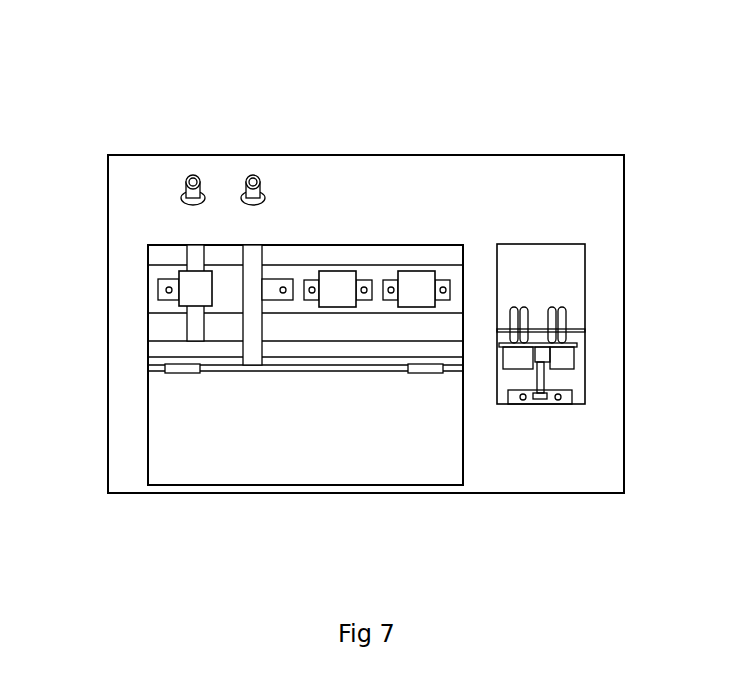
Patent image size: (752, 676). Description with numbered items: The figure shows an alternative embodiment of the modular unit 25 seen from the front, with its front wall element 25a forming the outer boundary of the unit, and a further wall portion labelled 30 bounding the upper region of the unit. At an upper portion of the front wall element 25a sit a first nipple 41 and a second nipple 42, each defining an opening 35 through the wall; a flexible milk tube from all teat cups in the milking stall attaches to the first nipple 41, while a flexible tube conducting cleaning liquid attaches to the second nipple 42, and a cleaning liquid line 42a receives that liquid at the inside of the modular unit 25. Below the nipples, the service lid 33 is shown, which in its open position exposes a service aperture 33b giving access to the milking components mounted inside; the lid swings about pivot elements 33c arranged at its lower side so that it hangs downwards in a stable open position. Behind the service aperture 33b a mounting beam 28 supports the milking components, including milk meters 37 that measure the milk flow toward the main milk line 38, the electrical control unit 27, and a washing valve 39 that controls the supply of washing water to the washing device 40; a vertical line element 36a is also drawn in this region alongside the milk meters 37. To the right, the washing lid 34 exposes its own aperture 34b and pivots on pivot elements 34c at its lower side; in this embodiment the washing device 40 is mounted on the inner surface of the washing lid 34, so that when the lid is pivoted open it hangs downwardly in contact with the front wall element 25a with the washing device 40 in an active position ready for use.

The modular unit 25 is at (518, 108).
The front wall element 25a is at (130, 412).
The housing wall 30 is at (370, 168).
The service lid 33 is at (203, 448).
The service aperture 33b is at (172, 253).
The pivot elements 33c is at (423, 371).
The guide bar 36a is at (198, 253).
The mounting beam 28 is at (157, 274).
The milk meter 37 is at (173, 288).
The cleaning liquid line 42a is at (255, 278).
The electrical control unit 27 is at (335, 287).
The washing valve 39 is at (417, 287).
The main milk line 38 is at (322, 348).
The opening 35 is at (185, 193).
The first nipple 41 is at (190, 177).
The second nipple 42 is at (248, 177).
The aperture 34b is at (575, 288).
The pivot elements 34c is at (573, 331).
The washing device 40 is at (563, 357).
The washing lid 34 is at (518, 377).